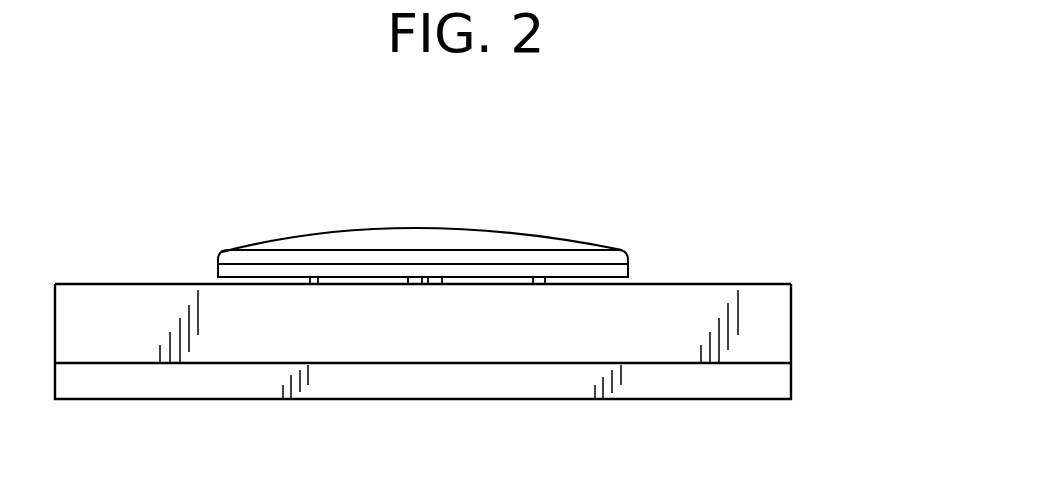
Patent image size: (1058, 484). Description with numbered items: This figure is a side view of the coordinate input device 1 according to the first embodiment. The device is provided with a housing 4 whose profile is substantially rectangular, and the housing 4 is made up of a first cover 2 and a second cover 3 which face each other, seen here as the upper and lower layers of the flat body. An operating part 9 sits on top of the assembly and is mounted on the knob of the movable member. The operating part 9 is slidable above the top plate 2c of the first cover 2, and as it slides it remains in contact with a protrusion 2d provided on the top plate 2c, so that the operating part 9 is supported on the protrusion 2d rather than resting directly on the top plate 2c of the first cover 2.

The coordinate input device 1 is at (147, 282).
The first cover 2 is at (765, 300).
The top plate 2c is at (668, 283).
The protrusion 2d is at (314, 283).
The second cover 3 is at (706, 390).
The housing 4 is at (798, 322).
The operating part 9 is at (467, 232).